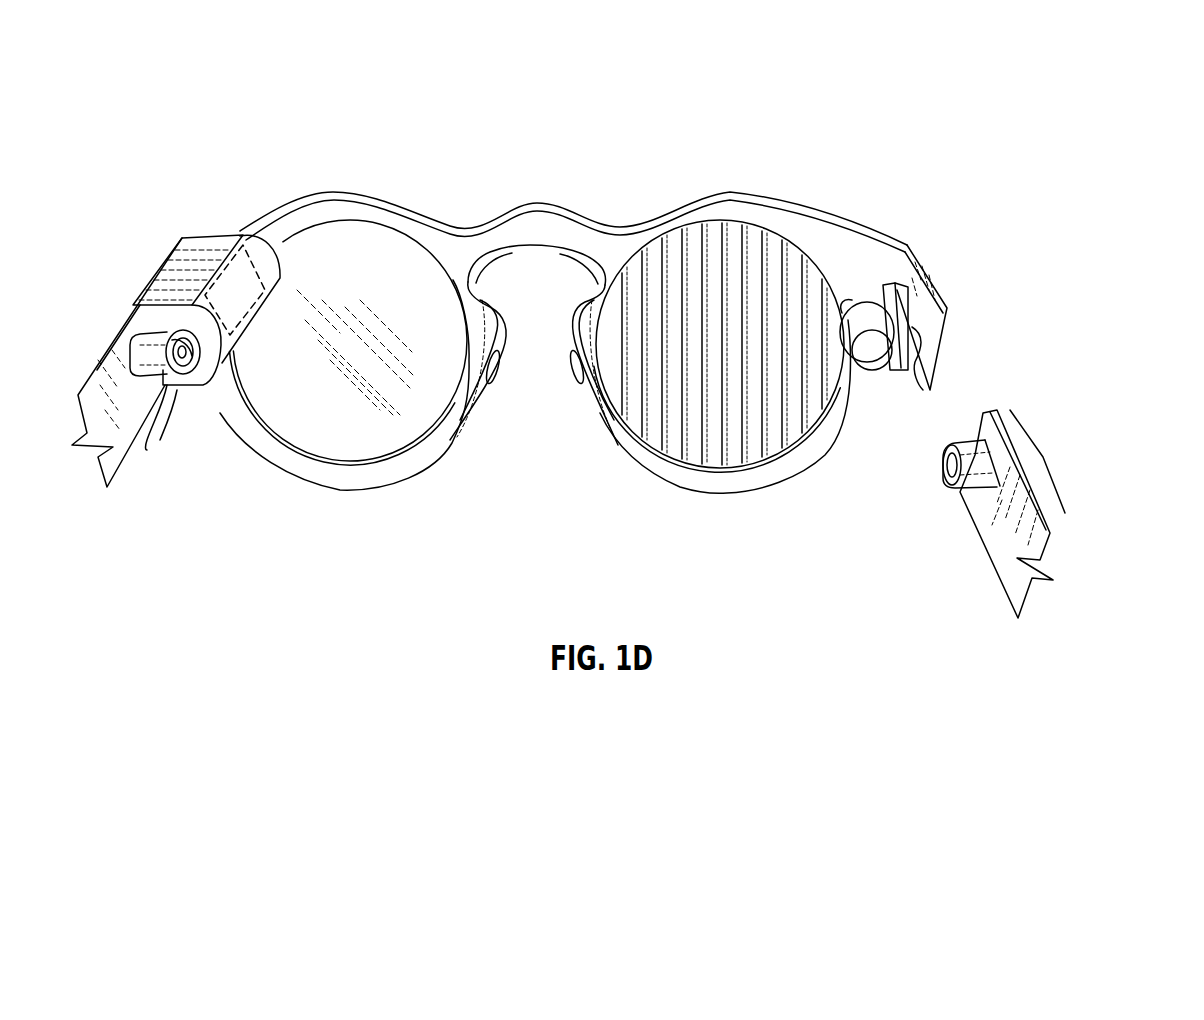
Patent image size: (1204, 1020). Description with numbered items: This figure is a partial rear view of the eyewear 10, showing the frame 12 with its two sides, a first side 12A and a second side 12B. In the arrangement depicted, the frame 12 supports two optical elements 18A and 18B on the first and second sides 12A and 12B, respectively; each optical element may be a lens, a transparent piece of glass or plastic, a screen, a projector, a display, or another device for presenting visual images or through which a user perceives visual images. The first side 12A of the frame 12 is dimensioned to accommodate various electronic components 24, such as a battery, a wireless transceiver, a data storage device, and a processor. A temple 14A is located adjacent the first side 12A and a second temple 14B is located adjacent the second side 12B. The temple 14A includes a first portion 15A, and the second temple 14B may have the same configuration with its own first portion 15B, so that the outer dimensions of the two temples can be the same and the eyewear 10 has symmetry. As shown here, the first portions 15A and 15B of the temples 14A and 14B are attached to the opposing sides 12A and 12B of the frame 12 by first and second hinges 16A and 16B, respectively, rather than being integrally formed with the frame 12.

The eyewear 10 is at (117, 99).
The frame 12 is at (728, 196).
The first side 12A is at (190, 246).
The second side 12B is at (913, 252).
The temple 14A is at (107, 378).
The second temple 14B is at (988, 522).
The first portion 15A is at (147, 450).
The first portion 15B is at (1043, 457).
The hinge 16A is at (147, 335).
The second hinge 16B is at (980, 437).
The optical element 18A is at (380, 440).
The optical element 18B is at (730, 450).
The electronic components 24 is at (237, 250).